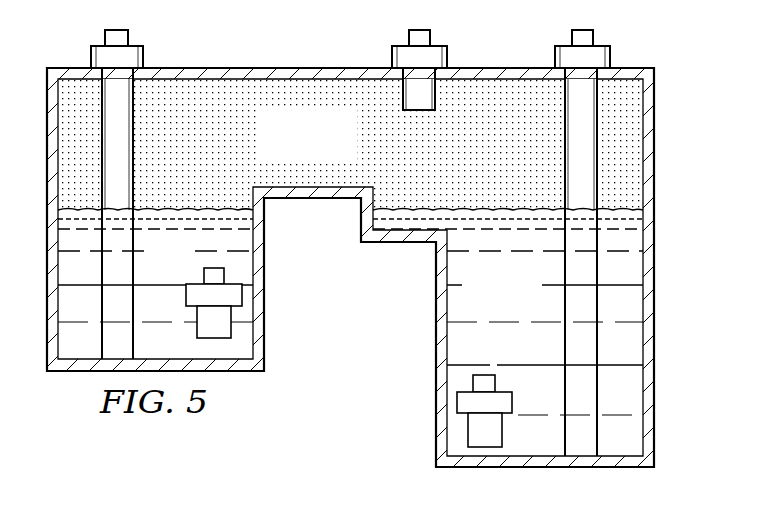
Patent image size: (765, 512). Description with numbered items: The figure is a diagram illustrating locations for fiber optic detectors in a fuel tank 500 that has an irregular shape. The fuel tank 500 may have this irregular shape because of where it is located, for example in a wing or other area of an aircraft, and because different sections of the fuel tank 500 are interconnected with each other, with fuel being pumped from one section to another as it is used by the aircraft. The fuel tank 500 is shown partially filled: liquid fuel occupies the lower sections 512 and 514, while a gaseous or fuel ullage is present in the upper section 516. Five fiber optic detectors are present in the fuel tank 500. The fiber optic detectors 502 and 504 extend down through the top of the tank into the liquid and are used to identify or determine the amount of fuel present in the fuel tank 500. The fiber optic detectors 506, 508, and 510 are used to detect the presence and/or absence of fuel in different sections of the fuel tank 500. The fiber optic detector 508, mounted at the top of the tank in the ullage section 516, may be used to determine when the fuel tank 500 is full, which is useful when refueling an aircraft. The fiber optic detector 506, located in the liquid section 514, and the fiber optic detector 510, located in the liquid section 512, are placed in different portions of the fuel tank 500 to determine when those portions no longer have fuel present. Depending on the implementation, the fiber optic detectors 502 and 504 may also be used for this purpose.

The fuel tank 500 is at (358, 342).
The fiber optic detector 502 is at (91, 52).
The fiber optic detector 504 is at (610, 52).
The fiber optic detector 506 is at (242, 296).
The fiber optic detector 508 is at (447, 52).
The fiber optic detector 510 is at (481, 375).
The section 512 is at (518, 285).
The section 514 is at (190, 267).
The section 516 is at (325, 158).